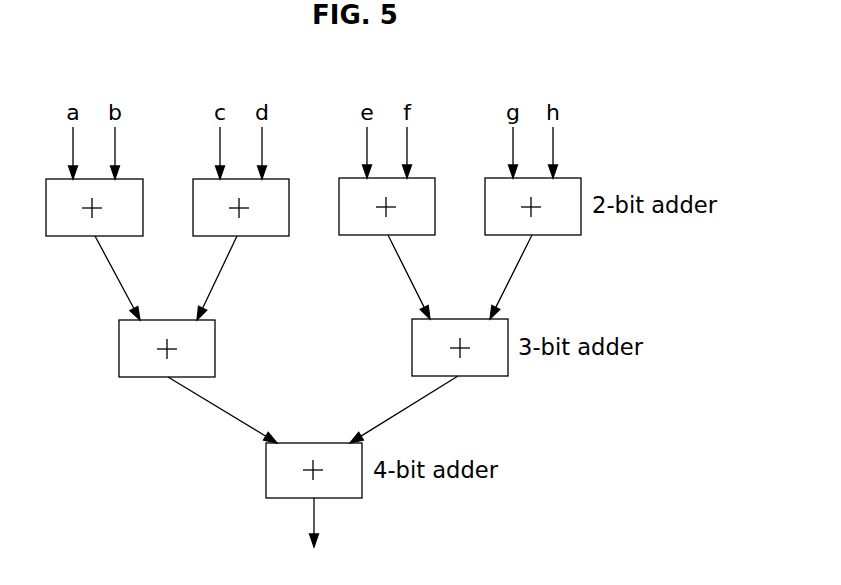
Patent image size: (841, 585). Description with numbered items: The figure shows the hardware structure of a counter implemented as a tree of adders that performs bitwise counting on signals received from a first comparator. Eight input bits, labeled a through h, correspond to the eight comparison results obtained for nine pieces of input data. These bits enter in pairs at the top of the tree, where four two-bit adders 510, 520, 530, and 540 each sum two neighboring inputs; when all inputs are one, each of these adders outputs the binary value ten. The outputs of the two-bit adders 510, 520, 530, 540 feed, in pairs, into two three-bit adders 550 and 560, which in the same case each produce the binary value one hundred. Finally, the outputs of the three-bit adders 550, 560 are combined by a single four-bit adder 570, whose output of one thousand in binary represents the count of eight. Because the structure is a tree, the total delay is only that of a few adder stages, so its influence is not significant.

The 2-bit adder 510 is at (127, 179).
The 2-bit adder 520 is at (274, 179).
The 2-bit adder 530 is at (420, 178).
The 2-bit adder 540 is at (567, 178).
The 3-bit adder 550 is at (207, 320).
The 3-bit adder 560 is at (498, 319).
The 4-bit adder 570 is at (266, 467).